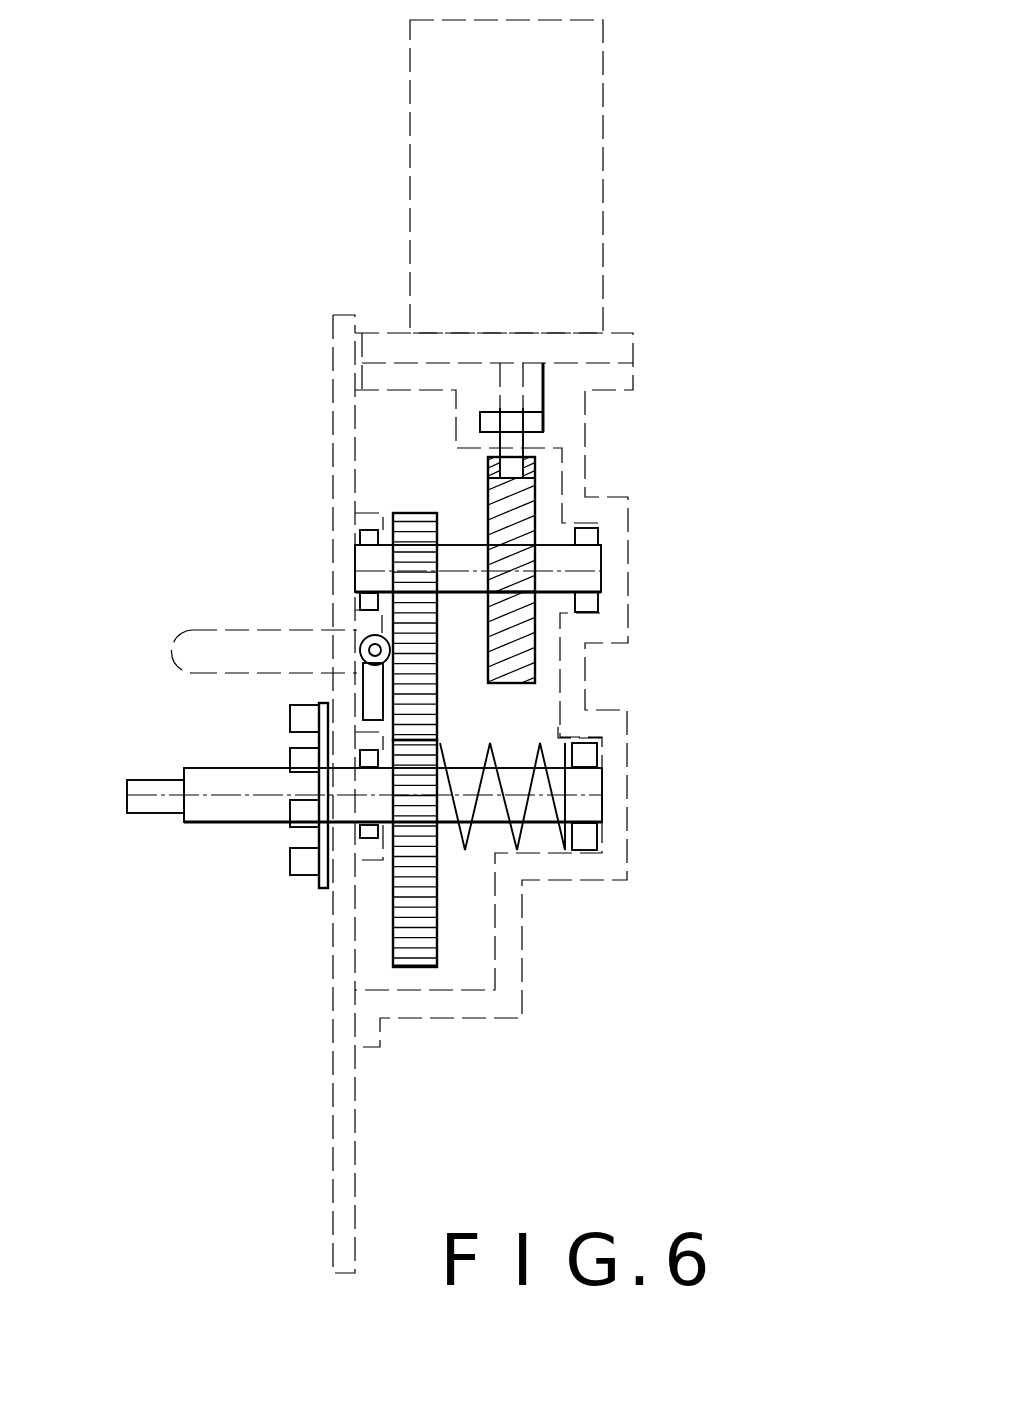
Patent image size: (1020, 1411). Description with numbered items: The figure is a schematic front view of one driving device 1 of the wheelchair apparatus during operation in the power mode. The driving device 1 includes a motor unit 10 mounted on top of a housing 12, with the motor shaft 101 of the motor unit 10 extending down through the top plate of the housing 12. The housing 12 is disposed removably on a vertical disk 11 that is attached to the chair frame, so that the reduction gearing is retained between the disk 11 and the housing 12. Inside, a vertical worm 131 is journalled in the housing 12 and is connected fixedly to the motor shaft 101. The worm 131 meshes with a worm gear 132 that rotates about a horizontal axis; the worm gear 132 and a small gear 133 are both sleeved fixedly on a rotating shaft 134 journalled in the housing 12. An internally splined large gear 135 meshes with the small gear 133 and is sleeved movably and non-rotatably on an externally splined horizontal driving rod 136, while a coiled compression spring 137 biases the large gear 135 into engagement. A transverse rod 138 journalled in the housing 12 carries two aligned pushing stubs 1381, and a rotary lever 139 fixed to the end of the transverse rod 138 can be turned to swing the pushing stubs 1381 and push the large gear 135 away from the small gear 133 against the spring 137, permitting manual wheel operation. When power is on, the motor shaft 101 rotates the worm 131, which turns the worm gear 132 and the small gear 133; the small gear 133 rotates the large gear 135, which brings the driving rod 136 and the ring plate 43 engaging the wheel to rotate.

The driving device 1 is at (715, 108).
The motor unit 10 is at (583, 202).
The motor shaft 101 is at (510, 392).
The vertical disk 11 is at (340, 452).
The housing 12 is at (590, 685).
The worm 131 is at (535, 490).
The worm gear 132 is at (535, 642).
The small gear 133 is at (410, 523).
The rotating shaft 134 is at (457, 550).
The large gear 135 is at (438, 925).
The driving rod 136 is at (195, 825).
The coiled compression spring 137 is at (518, 828).
The transverse rod 138 is at (372, 647).
The pushing stub 1381 is at (372, 697).
The rotary lever 139 is at (265, 640).
The ring plate 43 is at (318, 888).